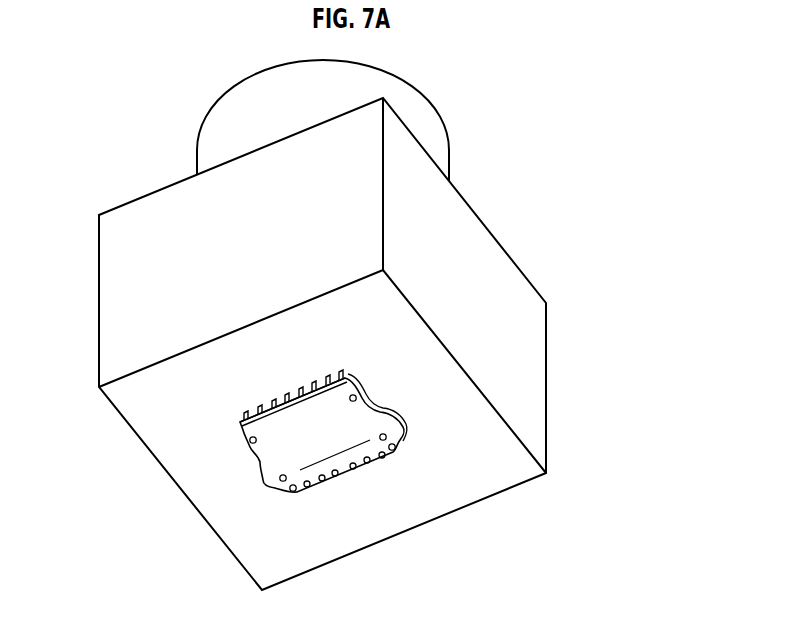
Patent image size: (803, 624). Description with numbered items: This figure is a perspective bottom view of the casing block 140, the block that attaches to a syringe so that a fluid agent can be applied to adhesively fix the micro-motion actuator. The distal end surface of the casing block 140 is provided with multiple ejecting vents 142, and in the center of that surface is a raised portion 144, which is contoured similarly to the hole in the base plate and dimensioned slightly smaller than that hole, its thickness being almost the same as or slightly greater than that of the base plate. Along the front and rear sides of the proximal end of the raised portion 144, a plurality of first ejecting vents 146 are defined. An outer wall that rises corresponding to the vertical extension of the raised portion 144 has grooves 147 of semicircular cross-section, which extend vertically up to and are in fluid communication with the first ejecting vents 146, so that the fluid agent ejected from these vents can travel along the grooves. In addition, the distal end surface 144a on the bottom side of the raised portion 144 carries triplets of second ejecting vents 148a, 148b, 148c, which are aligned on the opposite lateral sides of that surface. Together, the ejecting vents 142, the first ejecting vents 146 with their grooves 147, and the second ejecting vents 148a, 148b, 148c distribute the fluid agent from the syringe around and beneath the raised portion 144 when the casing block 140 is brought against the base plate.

The casing block 140 is at (570, 361).
The ejecting vents 142 is at (330, 364).
The raised portion 144 is at (241, 465).
The distal end surface 144a is at (338, 452).
The first ejecting vents 146 is at (258, 418).
The grooves 147 is at (265, 420).
The second ejecting vent 148a is at (250, 441).
The second ejecting vent 148b is at (280, 479).
The second ejecting vent 148c is at (290, 490).